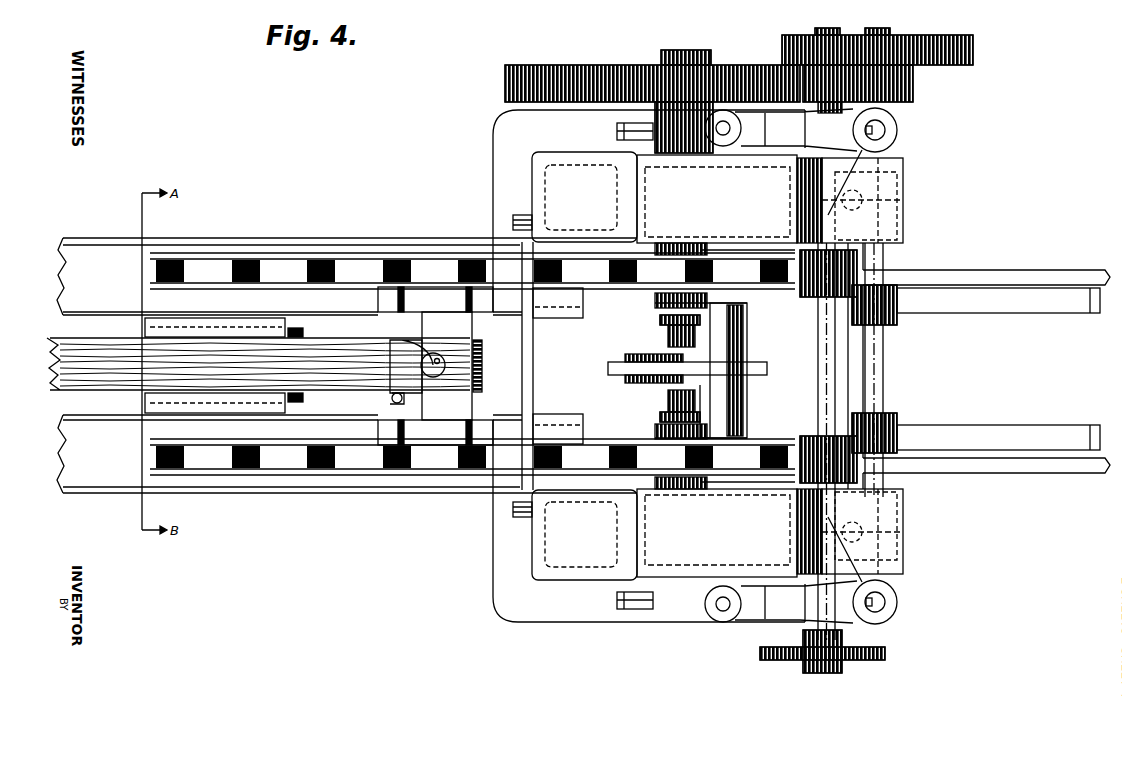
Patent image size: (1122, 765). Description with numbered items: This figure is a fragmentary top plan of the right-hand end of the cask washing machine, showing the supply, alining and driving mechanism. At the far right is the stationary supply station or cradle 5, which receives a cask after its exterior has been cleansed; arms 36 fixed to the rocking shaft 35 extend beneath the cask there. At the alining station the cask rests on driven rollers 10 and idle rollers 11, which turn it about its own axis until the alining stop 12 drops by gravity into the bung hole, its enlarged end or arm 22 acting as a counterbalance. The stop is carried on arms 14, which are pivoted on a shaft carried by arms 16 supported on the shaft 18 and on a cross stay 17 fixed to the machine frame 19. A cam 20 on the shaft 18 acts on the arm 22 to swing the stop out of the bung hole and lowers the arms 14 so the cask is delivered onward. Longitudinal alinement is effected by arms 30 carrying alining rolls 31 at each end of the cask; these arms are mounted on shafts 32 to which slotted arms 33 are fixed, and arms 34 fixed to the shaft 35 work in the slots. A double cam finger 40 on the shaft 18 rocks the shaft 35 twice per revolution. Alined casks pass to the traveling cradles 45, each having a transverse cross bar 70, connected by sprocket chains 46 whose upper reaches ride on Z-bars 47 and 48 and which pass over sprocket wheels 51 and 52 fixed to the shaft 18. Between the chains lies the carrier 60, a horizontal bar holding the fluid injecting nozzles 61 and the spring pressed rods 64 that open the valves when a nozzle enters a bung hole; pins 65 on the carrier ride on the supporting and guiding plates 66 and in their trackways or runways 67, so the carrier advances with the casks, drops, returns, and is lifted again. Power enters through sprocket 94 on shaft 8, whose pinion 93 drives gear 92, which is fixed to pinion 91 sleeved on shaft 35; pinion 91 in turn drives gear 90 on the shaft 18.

The supply station or cradle 5 is at (1012, 271).
The shaft 8 is at (836, 368).
The rollers 10 is at (810, 294).
The rollers 11 is at (660, 322).
The alining stop 12 is at (760, 364).
The arms 14 is at (748, 403).
The arms 16 is at (590, 318).
The cross stay 17 is at (524, 366).
The shaft 18 is at (686, 50).
The machine frame 19 is at (532, 178).
The cam 20 is at (700, 356).
The enlarged end or arm 22 is at (608, 369).
The arms 30 is at (776, 110).
The alining roll 31 is at (727, 112).
The shafts 32 is at (897, 129).
The arms 33 is at (903, 156).
The arms 34 is at (903, 202).
The shaft 35 is at (884, 372).
The arms 36 is at (996, 314).
The cam finger 40 is at (617, 132).
The traveling cradles 45 is at (378, 300).
The sprocket chains 46 is at (282, 252).
The Z-bar 47 is at (60, 286).
The Z-bar 48 is at (60, 438).
The sprocket wheel 51 is at (738, 262).
The sprocket wheel 52 is at (742, 478).
The carrier 60 is at (60, 363).
The fluid injecting nozzles 61 is at (424, 356).
The spring pressed rod 64 is at (391, 405).
The pins 65 is at (304, 332).
The supporting and guiding plates 66 is at (146, 324).
The trackways or runways 67 is at (150, 336).
The cross bar 70 is at (472, 330).
The gear 90 is at (542, 66).
The pinion 91 is at (913, 84).
The gear 92 is at (920, 36).
The pinion 93 is at (838, 30).
The sprocket 94 is at (858, 660).